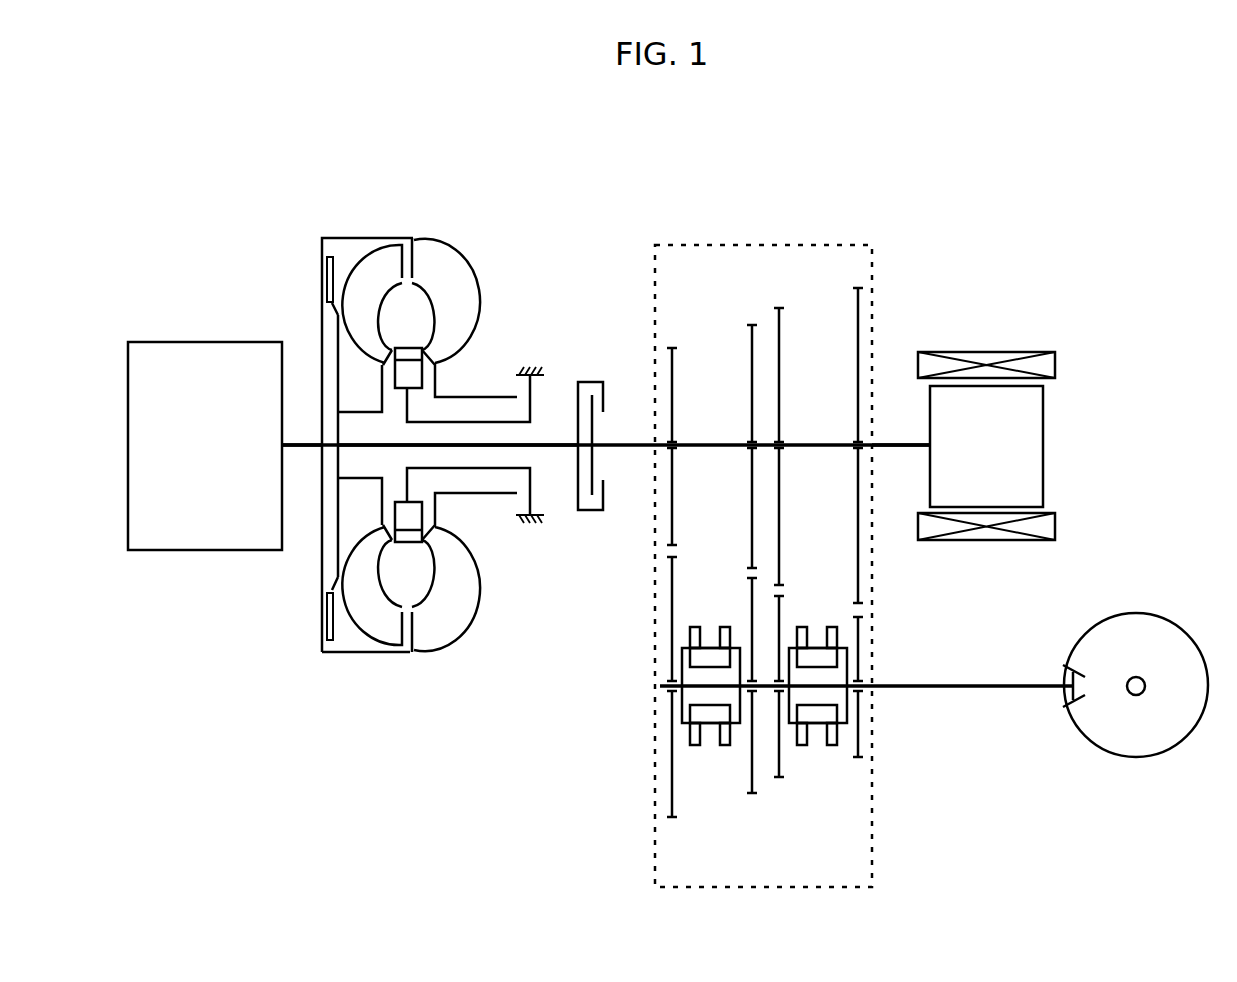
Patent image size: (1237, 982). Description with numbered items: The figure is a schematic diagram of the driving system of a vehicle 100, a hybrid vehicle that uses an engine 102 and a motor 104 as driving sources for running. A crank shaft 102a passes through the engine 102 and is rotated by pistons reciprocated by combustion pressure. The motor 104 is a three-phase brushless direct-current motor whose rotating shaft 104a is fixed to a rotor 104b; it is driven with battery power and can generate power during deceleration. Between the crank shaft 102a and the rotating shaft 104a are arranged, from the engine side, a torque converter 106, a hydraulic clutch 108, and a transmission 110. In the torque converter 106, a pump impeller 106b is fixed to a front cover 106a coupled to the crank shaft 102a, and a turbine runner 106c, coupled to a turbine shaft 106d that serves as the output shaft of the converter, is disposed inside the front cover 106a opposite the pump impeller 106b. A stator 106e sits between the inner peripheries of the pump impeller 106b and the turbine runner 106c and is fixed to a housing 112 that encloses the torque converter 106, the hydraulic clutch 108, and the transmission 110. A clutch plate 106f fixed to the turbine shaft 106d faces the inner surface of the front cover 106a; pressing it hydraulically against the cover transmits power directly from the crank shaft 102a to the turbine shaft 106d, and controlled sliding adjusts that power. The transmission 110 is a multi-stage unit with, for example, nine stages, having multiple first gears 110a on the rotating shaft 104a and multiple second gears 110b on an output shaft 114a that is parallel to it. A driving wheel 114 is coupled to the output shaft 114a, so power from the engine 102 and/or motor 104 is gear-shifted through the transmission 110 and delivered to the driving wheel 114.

The vehicle 100 is at (330, 158).
The engine 102 is at (230, 342).
The crank shaft 102a is at (300, 443).
The motor 104 is at (1023, 406).
The rotating shaft 104a is at (893, 443).
The rotor 104b is at (1043, 445).
The torque converter 106 is at (407, 433).
The front cover 106a is at (325, 598).
The pump impeller 106b is at (458, 622).
The turbine runner 106c is at (398, 648).
The turbine shaft 106d is at (388, 447).
The stator 106e is at (422, 517).
The clutch plate 106f is at (331, 652).
The hydraulic clutch 108 is at (614, 520).
The transmission 110 is at (741, 523).
The first gears 110a is at (860, 318).
The second gears 110b is at (672, 786).
The housing 112 is at (528, 372).
The driving wheel 114 is at (1135, 757).
The output shaft 114a is at (967, 688).